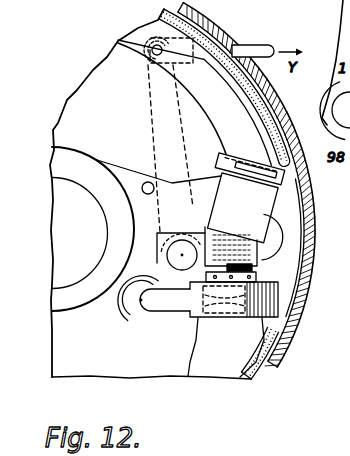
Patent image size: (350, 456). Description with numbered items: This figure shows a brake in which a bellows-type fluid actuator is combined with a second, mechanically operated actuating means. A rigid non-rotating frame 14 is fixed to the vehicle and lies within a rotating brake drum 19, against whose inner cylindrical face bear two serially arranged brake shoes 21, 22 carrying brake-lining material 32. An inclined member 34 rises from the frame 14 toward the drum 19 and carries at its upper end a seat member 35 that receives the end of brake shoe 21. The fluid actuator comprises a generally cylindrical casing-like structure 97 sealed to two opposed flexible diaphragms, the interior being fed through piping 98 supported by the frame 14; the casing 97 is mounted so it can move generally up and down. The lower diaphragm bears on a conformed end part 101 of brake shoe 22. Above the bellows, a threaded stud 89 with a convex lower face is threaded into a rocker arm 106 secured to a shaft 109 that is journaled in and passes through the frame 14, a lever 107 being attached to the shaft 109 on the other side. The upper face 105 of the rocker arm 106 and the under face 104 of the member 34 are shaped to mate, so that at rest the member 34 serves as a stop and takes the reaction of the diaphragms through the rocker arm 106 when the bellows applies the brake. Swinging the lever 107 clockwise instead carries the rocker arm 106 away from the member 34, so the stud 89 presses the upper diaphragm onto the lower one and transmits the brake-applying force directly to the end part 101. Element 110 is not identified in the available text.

The frame 14 is at (135, 193).
The brake drum 19 is at (306, 213).
The brake shoe 21 is at (222, 130).
The brake shoe 22 is at (211, 368).
The brake-lining material 32 is at (255, 88).
The member 34 is at (218, 168).
The seat member 35 is at (303, 184).
The threaded stud 89 is at (258, 276).
The casing-like structure 97 is at (280, 294).
The piping 98 is at (147, 305).
The end part 101 is at (212, 343).
The under face 104 is at (250, 210).
The upper face 105 is at (197, 231).
The rocker arm 106 is at (258, 248).
The lever 107 is at (150, 109).
The shaft 109 is at (167, 254).
The pin 110 is at (146, 182).